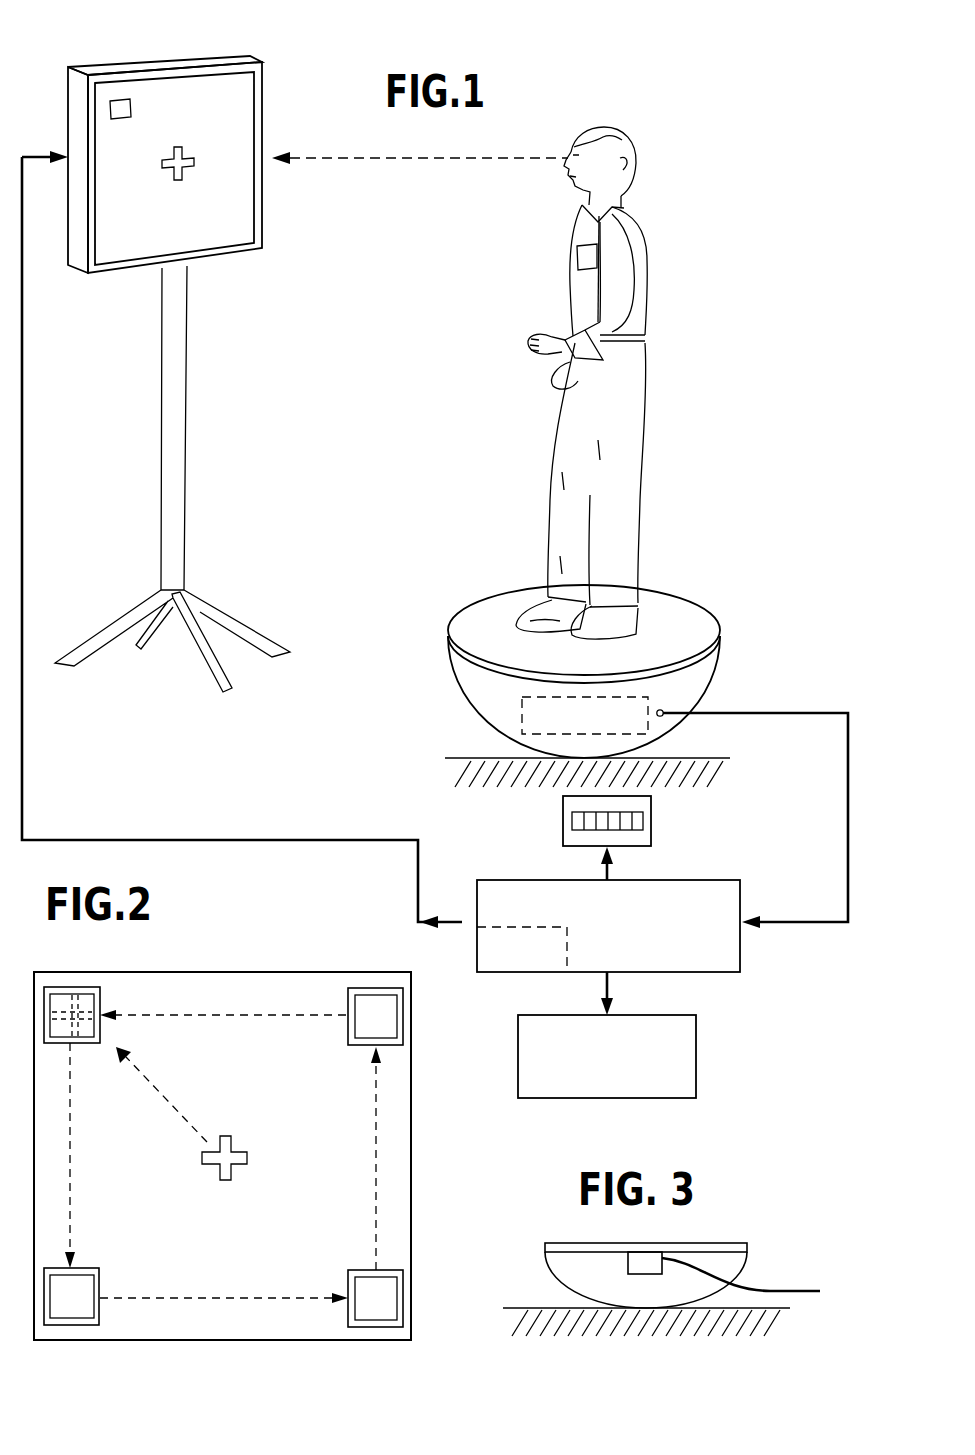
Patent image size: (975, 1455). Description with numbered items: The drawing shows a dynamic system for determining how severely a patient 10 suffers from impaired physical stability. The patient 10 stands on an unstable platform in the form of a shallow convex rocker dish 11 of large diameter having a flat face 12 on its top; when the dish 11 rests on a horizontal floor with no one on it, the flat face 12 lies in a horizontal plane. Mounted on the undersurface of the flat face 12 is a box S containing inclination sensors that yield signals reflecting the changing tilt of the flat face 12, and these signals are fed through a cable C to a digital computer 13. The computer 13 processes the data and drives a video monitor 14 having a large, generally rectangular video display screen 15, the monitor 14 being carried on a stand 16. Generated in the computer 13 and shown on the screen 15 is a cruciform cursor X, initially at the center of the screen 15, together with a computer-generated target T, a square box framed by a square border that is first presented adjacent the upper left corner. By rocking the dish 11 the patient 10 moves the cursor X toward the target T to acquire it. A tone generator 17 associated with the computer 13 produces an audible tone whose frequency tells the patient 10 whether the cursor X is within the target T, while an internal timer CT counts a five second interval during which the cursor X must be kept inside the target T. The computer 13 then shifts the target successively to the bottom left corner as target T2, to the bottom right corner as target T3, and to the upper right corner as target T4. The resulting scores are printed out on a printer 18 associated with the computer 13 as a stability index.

In FIG. 1, the patient 10 is at (668, 283).
In FIG. 1, the rocker dish 11 is at (712, 657).
In FIG. 3, the rocker dish 11 is at (735, 1262).
In FIG. 1, the flat face 12 is at (675, 607).
In FIG. 3, the flat face 12 is at (718, 1246).
In FIG. 1, the digital computer 13 is at (737, 952).
In FIG. 1, the video monitor 14 is at (212, 62).
In FIG. 1, the video display screen 15 is at (240, 120).
In FIG. 2, the video display screen 15 is at (190, 972).
In FIG. 1, the stand 16 is at (183, 396).
In FIG. 1, the tone generator 17 is at (697, 1040).
In FIG. 1, the printer 18 is at (651, 818).
In FIG. 1, the inclination sensor box S is at (530, 713).
In FIG. 3, the inclination sensor box S is at (634, 1268).
In FIG. 1, the cable C is at (848, 803).
In FIG. 3, the cable C is at (813, 1290).
In FIG. 1, the target T is at (116, 119).
In FIG. 2, the target T is at (101, 994).
In FIG. 1, the cursor X is at (178, 180).
In FIG. 2, the cursor X is at (74, 1005).
In FIG. 1, the internal timer CT is at (562, 946).
In FIG. 2, the target T2 is at (100, 1282).
In FIG. 2, the target T3 is at (348, 1281).
In FIG. 2, the target T4 is at (349, 1000).